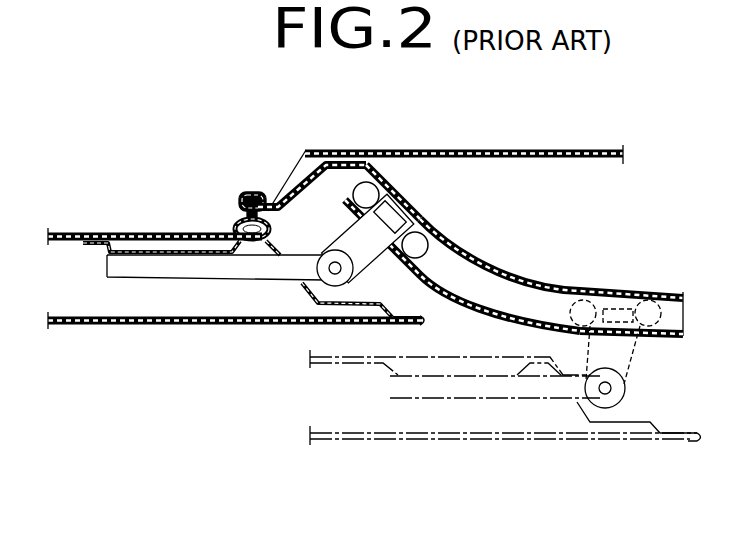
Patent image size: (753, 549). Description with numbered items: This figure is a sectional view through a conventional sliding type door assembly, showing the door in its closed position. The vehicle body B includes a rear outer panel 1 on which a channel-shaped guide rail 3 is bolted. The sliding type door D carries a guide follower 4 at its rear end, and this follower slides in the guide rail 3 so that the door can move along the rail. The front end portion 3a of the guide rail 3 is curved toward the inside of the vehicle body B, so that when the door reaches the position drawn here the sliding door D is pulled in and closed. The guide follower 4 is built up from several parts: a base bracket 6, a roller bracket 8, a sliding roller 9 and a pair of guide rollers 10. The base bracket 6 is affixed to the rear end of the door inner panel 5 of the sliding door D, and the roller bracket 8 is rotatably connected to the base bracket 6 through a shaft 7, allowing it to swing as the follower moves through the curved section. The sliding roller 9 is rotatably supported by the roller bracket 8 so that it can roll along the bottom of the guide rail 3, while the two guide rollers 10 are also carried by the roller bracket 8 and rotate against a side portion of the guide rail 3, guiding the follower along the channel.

The rear outer panel 1 is at (562, 287).
The guide rail 3 is at (670, 339).
The front end portion 3a is at (479, 313).
The guide follower 4 is at (383, 264).
The door inner panel 5 is at (78, 231).
The base bracket 6 is at (156, 279).
The shaft 7 is at (307, 289).
The roller bracket 8 is at (340, 238).
The sliding roller 9 is at (418, 210).
The guide rollers 10 is at (383, 190).
The vehicle body B is at (469, 149).
The sliding type door D is at (100, 327).